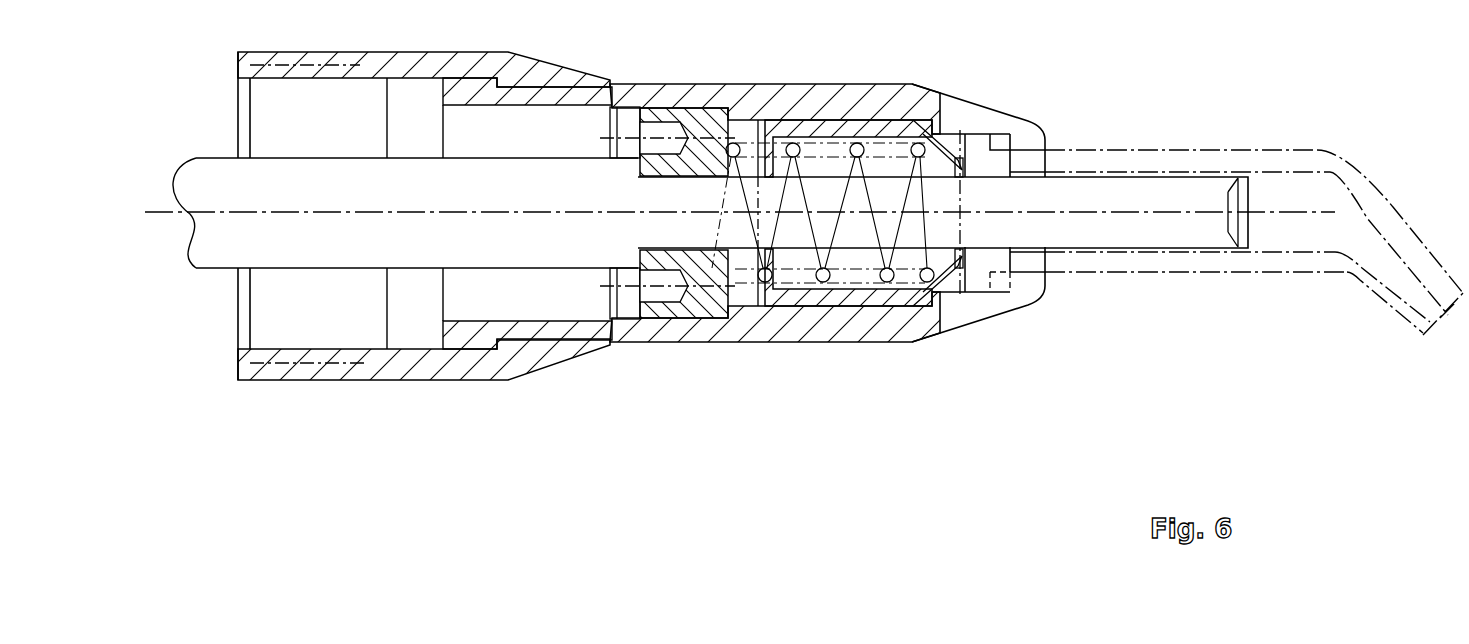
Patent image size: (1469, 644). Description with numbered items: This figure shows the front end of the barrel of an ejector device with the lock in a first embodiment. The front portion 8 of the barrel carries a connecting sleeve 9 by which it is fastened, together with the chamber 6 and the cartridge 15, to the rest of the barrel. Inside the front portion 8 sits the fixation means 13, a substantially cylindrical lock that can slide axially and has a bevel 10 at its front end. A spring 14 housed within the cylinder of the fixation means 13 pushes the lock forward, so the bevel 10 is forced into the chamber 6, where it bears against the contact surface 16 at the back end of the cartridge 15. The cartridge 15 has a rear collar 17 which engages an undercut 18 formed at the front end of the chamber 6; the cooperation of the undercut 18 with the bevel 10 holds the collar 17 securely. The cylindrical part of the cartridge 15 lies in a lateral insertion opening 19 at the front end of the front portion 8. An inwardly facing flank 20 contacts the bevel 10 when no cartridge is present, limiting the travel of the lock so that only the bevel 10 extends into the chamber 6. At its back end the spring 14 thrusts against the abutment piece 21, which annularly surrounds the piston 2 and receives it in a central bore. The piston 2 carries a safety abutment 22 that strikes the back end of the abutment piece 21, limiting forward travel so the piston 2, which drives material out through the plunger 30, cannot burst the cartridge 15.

The piston 2 is at (305, 243).
The connecting sleeve 9 is at (408, 368).
The safety abutment 22 is at (638, 263).
The abutment piece 21 is at (707, 297).
The spring 14 is at (765, 280).
The front portion of the barrel 8 is at (815, 322).
The fixation means 13 is at (860, 295).
The inwardly facing flank 20 is at (942, 274).
The bevel 10 is at (981, 268).
The chamber 6 is at (983, 265).
The lateral insertion opening 19 is at (1030, 258).
The cartridge 15 is at (1175, 262).
The contact surface 16 is at (1010, 143).
The plunger 30 is at (1300, 232).
The collar 17 is at (977, 143).
The undercut 18 is at (1003, 142).